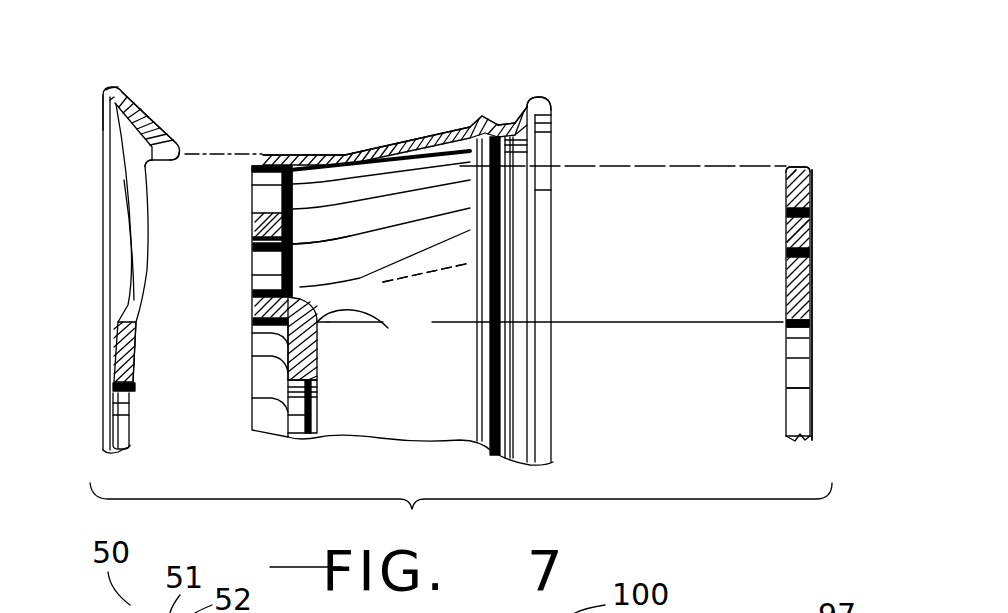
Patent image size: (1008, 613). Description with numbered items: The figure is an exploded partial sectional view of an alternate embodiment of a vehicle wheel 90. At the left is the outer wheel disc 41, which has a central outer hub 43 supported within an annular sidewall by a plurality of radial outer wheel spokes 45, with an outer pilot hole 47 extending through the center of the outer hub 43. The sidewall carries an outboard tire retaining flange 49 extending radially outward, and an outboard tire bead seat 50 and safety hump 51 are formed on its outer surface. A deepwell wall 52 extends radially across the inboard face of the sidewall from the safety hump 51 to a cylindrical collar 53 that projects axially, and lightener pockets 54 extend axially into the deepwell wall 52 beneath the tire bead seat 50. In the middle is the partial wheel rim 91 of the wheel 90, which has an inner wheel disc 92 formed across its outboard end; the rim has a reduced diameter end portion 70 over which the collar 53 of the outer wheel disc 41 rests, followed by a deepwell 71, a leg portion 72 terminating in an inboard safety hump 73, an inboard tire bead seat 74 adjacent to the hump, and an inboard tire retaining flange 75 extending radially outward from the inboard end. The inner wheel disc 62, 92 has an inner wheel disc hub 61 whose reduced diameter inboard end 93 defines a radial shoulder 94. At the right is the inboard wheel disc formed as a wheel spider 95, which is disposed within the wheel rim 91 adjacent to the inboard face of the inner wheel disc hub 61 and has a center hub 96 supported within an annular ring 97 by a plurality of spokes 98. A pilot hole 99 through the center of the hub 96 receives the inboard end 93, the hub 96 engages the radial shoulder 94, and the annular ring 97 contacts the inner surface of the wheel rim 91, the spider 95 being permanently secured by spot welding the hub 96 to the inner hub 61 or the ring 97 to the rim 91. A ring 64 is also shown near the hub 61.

The outer wheel disc 41 is at (94, 270).
The central outer hub 43 is at (133, 350).
The radial outer wheel spokes 45 is at (146, 242).
The outer pilot hole 47 is at (138, 431).
The outboard tire retaining flange 49 is at (124, 119).
The outboard tire bead seat 50 is at (150, 120).
The safety hump 51 is at (158, 121).
The deepwell wall 52 is at (178, 138).
The cylindrical collar 53 is at (176, 158).
The lightener pockets 54 is at (178, 148).
The inner wheel disc hub 61 is at (294, 300).
The inner wheel disc 62 is at (293, 197).
The lower ring 64 is at (314, 404).
The reduced diameter end portion 70 is at (263, 156).
The deepwell 71 is at (300, 159).
The leg portion 72 is at (373, 150).
The inboard safety hump 73 is at (484, 116).
The inboard tire bead seat 74 is at (506, 120).
The inboard tire retaining flange 75 is at (548, 118).
The vehicle wheel 90 is at (656, 128).
The partial wheel rim 91 is at (457, 312).
The inner wheel disc 92 is at (300, 264).
The inboard end 93 is at (326, 317).
The radial shoulder 94 is at (374, 336).
The wheel spider 95 is at (820, 332).
The center hub 96 is at (786, 312).
The annular ring 97 is at (810, 164).
The spokes 98 is at (812, 250).
The pilot hole 99 is at (820, 410).